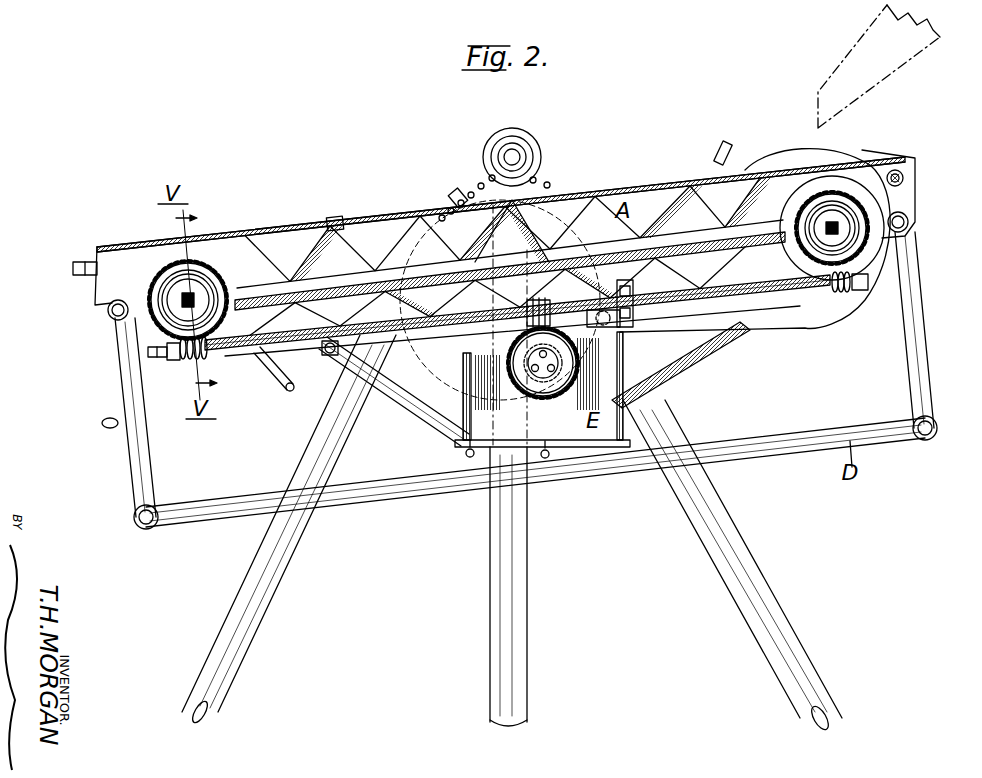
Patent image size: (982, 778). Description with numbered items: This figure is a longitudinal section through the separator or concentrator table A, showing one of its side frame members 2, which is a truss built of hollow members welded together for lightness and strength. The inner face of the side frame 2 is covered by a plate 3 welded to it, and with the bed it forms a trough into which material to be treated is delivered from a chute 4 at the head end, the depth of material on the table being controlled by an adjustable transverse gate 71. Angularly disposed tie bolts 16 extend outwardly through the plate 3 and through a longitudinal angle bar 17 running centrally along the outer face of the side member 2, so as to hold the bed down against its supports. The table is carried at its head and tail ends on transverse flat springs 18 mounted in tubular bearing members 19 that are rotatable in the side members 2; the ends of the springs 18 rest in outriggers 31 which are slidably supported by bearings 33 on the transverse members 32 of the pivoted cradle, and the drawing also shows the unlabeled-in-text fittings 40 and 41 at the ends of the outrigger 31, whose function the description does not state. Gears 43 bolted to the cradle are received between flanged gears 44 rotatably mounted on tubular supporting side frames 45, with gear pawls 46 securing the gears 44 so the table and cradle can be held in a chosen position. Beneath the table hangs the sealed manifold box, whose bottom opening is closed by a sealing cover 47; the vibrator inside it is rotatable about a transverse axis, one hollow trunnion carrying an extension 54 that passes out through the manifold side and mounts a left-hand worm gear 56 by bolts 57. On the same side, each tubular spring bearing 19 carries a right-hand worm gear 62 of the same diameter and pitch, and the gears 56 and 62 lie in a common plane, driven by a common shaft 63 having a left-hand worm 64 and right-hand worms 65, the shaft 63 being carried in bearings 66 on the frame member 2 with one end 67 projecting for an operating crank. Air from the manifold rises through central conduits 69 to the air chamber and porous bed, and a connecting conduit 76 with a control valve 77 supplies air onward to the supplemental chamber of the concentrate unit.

The side frame member 2 is at (640, 185).
The plate 3 is at (500, 231).
The chute 4 is at (879, 66).
The tie bolt 16 is at (400, 235).
The longitudinal angle bar 17 is at (307, 292).
The transverse flat spring 18 is at (188, 292).
The tubular bearing member 19 is at (205, 268).
The outrigger 31 is at (122, 257).
The transverse member 32 is at (113, 318).
The bearing 33 is at (108, 306).
The end plug 40 is at (73, 268).
The bolt head 41 is at (904, 177).
The gear 43 is at (452, 196).
The flanged gear 44 is at (518, 142).
The tubular supporting side frame 45 is at (243, 621).
The gear pawl 46 is at (470, 182).
The sealing cover 47 is at (487, 455).
The extension 54 is at (574, 382).
The left-hand worm gear 56 is at (545, 384).
The bolt 57 is at (516, 378).
The right-hand worm gear 62 is at (158, 290).
The common shaft 63 is at (770, 290).
The left-hand worm 64 is at (528, 306).
The right-hand worm 65 is at (199, 361).
The bearing 66 is at (175, 362).
The shaft end 67 is at (148, 352).
The central conduit 69 is at (440, 400).
The adjustable transverse gate 71 is at (725, 143).
The connecting conduit 76 is at (311, 353).
The control valve 77 is at (337, 354).